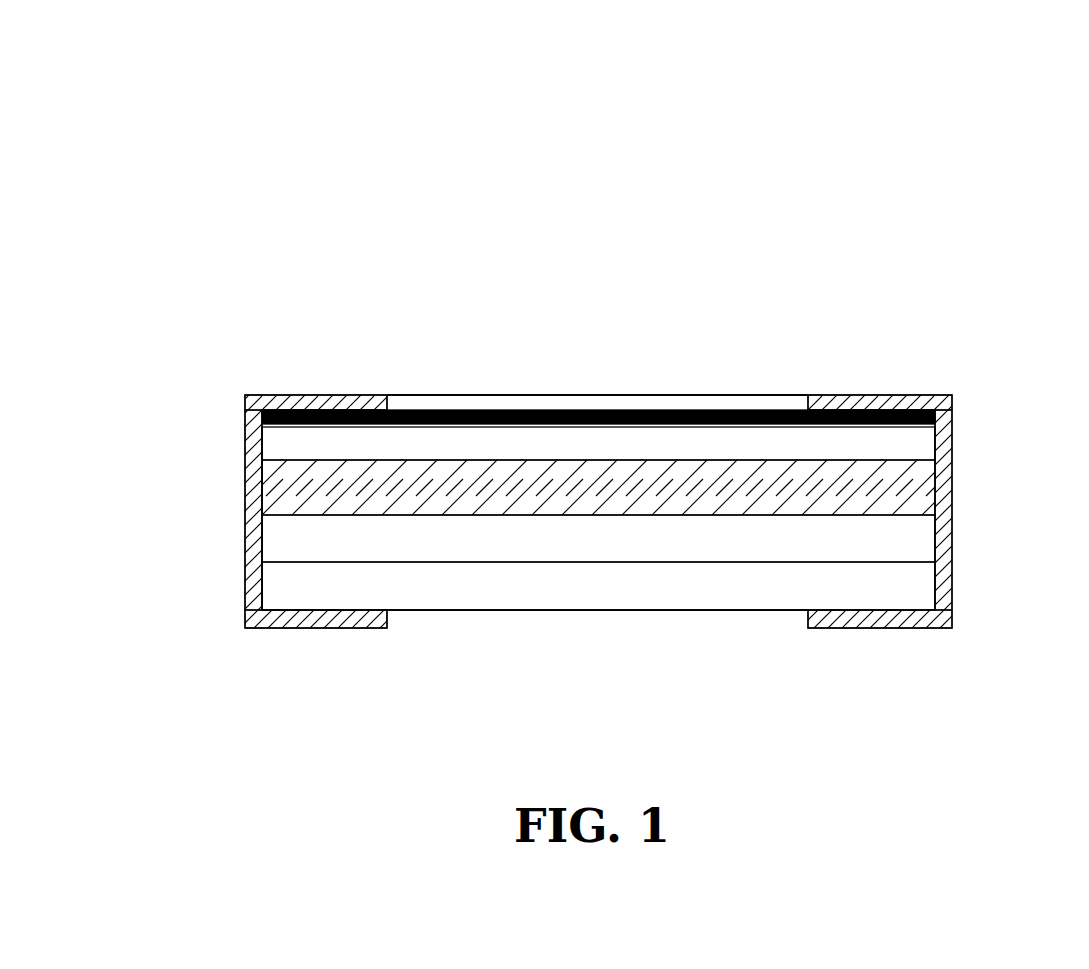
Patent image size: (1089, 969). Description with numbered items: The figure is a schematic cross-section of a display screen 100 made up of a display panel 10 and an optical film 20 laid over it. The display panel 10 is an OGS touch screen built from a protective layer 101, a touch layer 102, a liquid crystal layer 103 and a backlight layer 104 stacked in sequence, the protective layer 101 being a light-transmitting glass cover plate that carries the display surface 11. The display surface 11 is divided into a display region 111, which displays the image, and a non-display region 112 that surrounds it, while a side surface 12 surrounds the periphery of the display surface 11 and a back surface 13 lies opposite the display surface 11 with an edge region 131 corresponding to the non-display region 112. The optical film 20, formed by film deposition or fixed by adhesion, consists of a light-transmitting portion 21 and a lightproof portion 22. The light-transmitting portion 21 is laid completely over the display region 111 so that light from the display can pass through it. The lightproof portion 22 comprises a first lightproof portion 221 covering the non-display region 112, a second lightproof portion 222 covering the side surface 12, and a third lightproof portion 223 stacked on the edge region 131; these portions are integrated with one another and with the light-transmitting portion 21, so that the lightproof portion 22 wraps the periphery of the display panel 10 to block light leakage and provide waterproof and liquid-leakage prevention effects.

The display screen 100 is at (787, 165).
The display panel 10 is at (672, 496).
The protective layer 101 is at (912, 448).
The touch layer 102 is at (912, 497).
The liquid crystal layer 103 is at (912, 546).
The backlight layer 104 is at (912, 595).
The display surface 11 is at (862, 312).
The display region 111 is at (700, 397).
The non-display region 112 is at (846, 398).
The side surface 12 is at (263, 543).
The back surface 13 is at (663, 612).
The edge region 131 is at (347, 628).
The optical film 20 is at (518, 419).
The light-transmitting portion 21 is at (573, 400).
The lightproof portion 22 is at (518, 458).
The first lightproof portion 221 is at (290, 394).
The second lightproof portion 222 is at (247, 480).
The third lightproof portion 223 is at (566, 621).